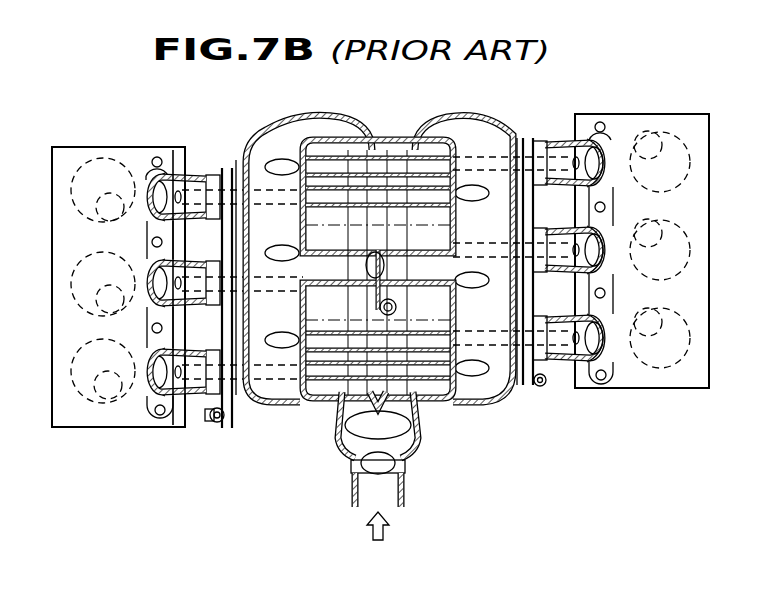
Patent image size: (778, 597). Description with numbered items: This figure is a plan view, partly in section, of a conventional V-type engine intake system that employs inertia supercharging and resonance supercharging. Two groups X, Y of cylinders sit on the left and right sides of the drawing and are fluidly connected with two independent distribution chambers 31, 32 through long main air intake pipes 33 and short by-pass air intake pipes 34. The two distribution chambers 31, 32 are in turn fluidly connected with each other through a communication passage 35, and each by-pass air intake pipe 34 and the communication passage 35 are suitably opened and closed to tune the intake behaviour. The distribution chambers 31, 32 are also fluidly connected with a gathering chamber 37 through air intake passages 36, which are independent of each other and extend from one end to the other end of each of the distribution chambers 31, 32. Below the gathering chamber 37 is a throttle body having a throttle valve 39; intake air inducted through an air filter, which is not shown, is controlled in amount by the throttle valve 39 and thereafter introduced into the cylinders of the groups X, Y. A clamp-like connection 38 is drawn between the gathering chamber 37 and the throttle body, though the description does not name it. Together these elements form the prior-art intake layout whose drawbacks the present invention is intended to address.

The distribution chamber 31 is at (248, 138).
The distribution chamber 32 is at (505, 140).
The long main air intake pipe 33 is at (338, 205).
The short by-pass air intake pipe 34 is at (194, 265).
The communication passage 35 is at (423, 240).
The air intake passage 36 is at (373, 124).
The gathering chamber 37 is at (402, 432).
The clamp band 38 is at (351, 466).
The throttle valve 39 is at (400, 482).
The group of cylinders X is at (128, 146).
The group of cylinders Y is at (638, 114).